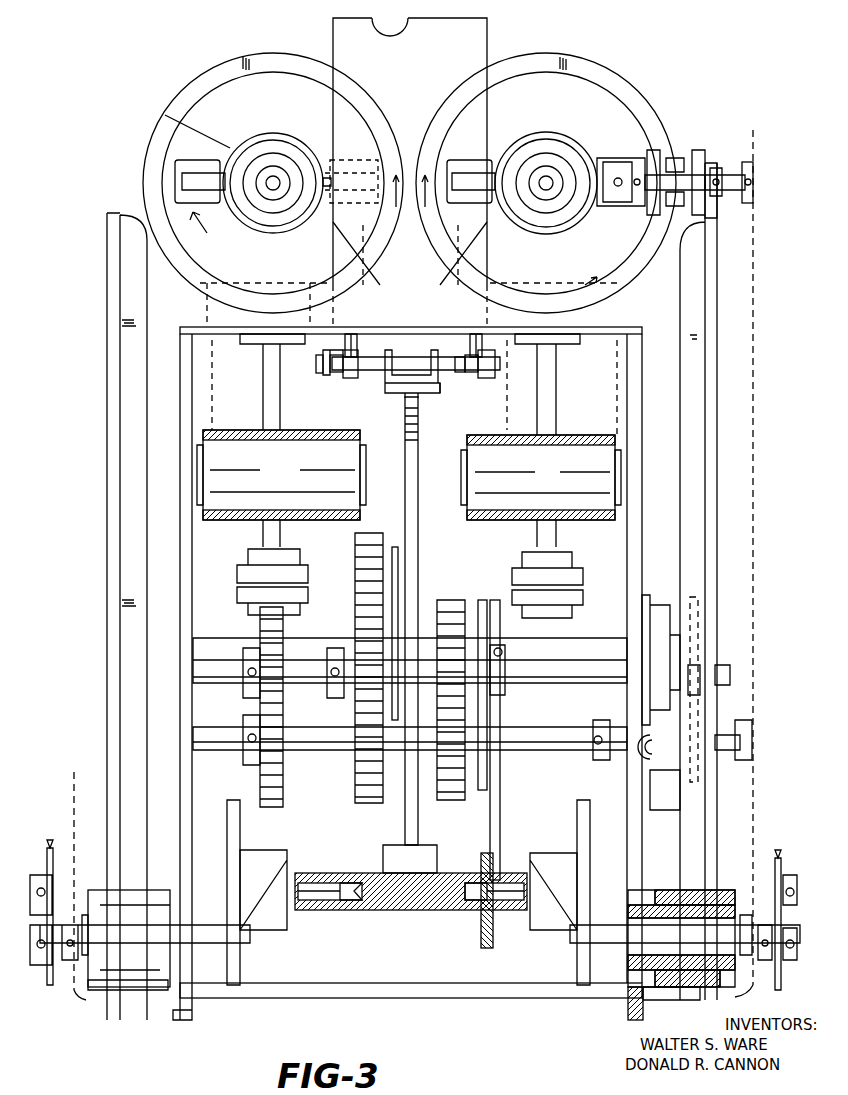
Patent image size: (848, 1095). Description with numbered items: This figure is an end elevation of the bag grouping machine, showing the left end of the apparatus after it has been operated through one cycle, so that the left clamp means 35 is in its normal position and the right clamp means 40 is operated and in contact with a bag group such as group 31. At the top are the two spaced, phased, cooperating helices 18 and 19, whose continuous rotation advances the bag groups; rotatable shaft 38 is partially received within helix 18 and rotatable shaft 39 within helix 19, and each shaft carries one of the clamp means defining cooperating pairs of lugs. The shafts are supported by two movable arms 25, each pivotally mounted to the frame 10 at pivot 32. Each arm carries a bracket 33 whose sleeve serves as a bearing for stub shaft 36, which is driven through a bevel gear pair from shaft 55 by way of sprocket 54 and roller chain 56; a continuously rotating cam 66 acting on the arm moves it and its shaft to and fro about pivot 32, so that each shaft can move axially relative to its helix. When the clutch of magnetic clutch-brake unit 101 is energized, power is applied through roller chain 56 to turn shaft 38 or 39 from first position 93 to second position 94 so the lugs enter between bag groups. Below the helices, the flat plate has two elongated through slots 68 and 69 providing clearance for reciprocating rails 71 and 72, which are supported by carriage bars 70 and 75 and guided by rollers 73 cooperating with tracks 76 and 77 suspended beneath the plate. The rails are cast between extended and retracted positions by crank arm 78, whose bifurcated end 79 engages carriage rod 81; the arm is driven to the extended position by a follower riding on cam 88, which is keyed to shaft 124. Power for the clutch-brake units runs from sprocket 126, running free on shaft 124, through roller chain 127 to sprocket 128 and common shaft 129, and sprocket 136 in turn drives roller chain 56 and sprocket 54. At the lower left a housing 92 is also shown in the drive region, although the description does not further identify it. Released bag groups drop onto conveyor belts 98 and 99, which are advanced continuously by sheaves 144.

The frame 10 is at (180, 562).
The helix 18 is at (261, 53).
The helix 19 is at (622, 61).
The movable arm 25 is at (107, 530).
The bag group 31 is at (487, 44).
The pivot 32 is at (245, 942).
The bracket 33 is at (696, 150).
The clamp means 35 is at (214, 138).
The stub shaft 36 is at (548, 190).
The rotatable shaft 38 is at (278, 131).
The rotatable shaft 39 is at (531, 129).
The clamp means 40 is at (469, 150).
The sprocket 54 is at (756, 180).
The shaft 55 is at (730, 172).
The roller chain 56 is at (755, 262).
The cam 66 is at (700, 618).
The elongated through slot 68 is at (352, 343).
The elongated through slot 69 is at (470, 345).
The carriage bar 70 is at (358, 380).
The reciprocating rail 71 is at (335, 350).
The reciprocating rail 72 is at (496, 334).
The roller 73 is at (341, 373).
The carriage bar 75 is at (462, 373).
The track 76 is at (325, 365).
The track 77 is at (496, 368).
The crank arm 78 is at (418, 492).
The bifurcated end 79 is at (441, 385).
The carriage rod 81 is at (410, 357).
The cam 88 is at (398, 580).
The gear box 92 is at (146, 952).
The first position 93 is at (184, 150).
The second position 94 is at (345, 150).
The conveyor belt 98 is at (248, 549).
The conveyor belt 99 is at (512, 552).
The magnetic clutch-brake unit 101 is at (271, 845).
The shaft 124 is at (593, 640).
The sprocket 126 is at (483, 602).
The roller chain 127 is at (490, 780).
The sprocket 128 is at (493, 940).
The common shaft 129 is at (415, 912).
The sprocket 136 is at (765, 975).
The sheave 144 is at (276, 479).